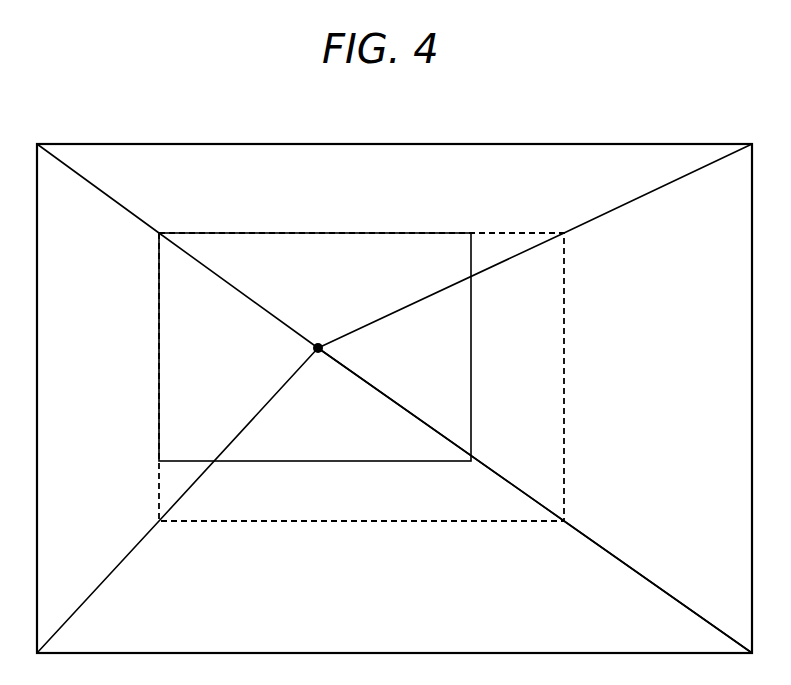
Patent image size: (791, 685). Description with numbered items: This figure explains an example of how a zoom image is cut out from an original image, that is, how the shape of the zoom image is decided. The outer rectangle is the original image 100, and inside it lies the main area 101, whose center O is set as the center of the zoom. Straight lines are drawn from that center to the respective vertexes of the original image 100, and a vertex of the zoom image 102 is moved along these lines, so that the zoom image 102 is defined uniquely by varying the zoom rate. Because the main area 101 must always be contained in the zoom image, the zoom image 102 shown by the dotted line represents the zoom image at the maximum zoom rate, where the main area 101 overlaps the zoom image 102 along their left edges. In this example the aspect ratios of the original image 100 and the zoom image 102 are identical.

The original image 100 is at (443, 144).
The main area 101 is at (471, 341).
The zoom image 102 is at (564, 303).